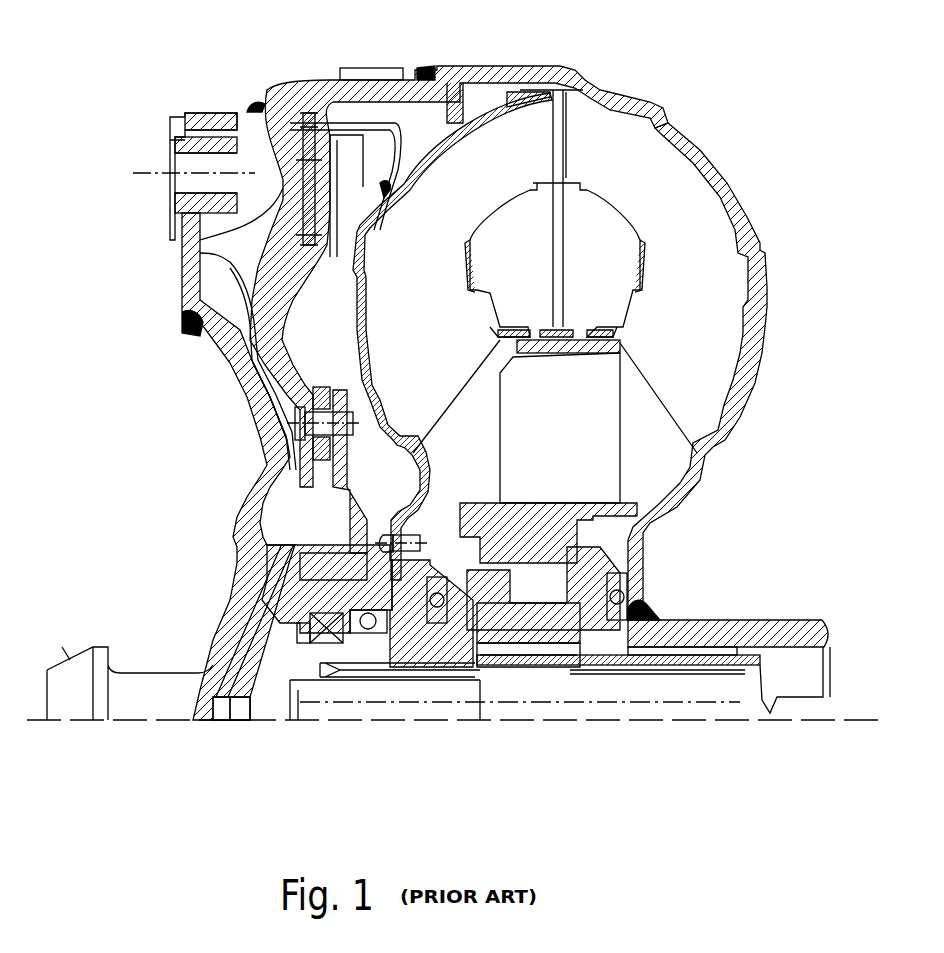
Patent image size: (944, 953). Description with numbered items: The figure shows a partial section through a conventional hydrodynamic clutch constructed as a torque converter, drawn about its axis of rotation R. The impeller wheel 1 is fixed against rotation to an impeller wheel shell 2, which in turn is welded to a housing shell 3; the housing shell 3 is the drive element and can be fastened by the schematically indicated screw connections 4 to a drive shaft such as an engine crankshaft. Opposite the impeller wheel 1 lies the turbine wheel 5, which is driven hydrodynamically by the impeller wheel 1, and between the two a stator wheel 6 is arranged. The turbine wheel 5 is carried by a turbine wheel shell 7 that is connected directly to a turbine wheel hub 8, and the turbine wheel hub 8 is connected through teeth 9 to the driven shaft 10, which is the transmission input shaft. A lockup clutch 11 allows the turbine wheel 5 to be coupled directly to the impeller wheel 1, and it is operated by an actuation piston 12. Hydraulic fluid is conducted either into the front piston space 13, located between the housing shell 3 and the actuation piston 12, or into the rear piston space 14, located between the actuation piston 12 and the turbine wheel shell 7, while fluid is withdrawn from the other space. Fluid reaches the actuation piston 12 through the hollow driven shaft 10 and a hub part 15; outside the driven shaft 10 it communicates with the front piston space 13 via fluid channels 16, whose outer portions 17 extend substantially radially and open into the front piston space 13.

The impeller wheel 1 is at (731, 338).
The impeller wheel shell 2 is at (651, 104).
The housing shell 3 is at (265, 437).
The screw connections 4 is at (148, 182).
The turbine wheel 5 is at (435, 353).
The stator wheel 6 is at (575, 437).
The turbine wheel shell 7 is at (450, 123).
The turbine wheel hub 8 is at (412, 658).
The teeth 9 is at (363, 673).
The driven shaft 10 is at (658, 712).
The lockup clutch 11 is at (330, 125).
The actuation piston 12 is at (262, 342).
The front piston space 13 is at (263, 363).
The rear piston space 14 is at (350, 213).
The hub part 15 is at (300, 601).
The fluid channels 16 is at (152, 711).
The outer portions 17 is at (230, 700).
The axis of rotation R is at (533, 720).